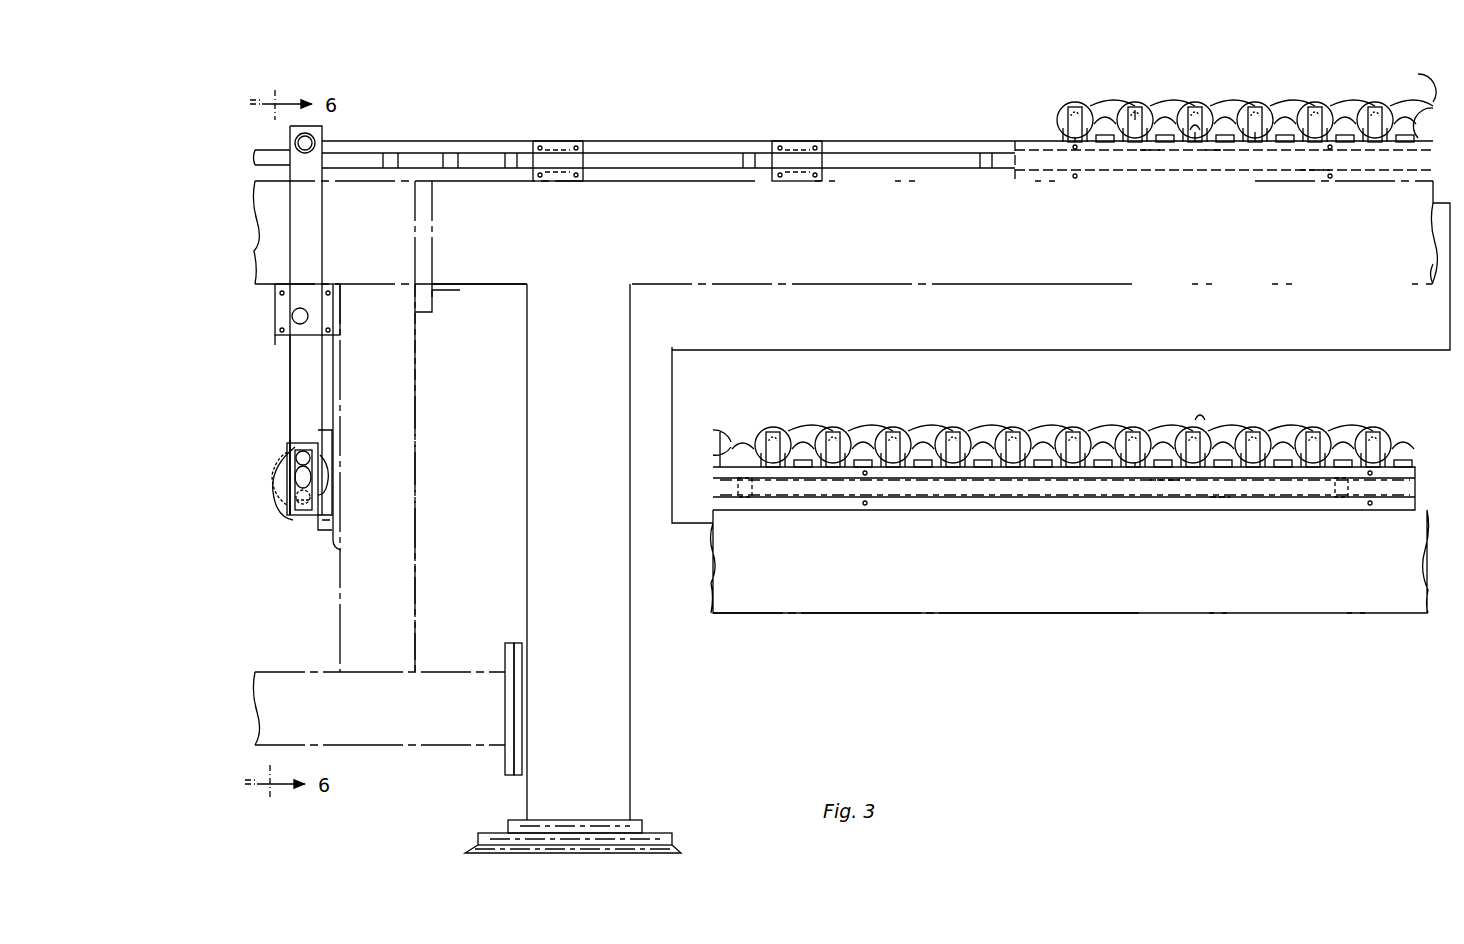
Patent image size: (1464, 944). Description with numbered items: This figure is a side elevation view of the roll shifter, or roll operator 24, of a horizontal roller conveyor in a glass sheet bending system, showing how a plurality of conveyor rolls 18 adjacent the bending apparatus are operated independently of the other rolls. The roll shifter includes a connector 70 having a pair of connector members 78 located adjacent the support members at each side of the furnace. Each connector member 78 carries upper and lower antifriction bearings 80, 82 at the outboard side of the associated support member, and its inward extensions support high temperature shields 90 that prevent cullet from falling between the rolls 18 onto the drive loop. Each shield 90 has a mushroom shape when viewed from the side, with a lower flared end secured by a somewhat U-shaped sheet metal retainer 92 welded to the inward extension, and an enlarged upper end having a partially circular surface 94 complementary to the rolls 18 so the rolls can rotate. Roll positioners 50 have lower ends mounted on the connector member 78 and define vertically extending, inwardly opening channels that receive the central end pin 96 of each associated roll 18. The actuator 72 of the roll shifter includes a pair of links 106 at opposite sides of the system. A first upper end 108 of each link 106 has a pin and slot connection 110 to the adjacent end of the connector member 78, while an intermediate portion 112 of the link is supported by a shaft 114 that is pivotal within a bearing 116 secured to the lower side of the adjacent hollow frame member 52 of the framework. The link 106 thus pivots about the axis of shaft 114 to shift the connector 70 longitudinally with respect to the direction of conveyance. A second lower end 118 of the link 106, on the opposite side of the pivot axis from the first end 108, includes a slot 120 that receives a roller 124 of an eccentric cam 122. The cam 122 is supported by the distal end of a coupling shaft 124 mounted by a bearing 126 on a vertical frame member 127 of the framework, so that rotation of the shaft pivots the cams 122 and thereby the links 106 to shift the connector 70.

The conveyor roll 18 is at (1185, 135).
The roll operator 24 is at (1005, 129).
The roll positioner 50 is at (1078, 110).
The frame member 52 is at (490, 284).
The connector 70 is at (798, 140).
The actuator 72 is at (280, 370).
The connector member 78 is at (583, 140).
The upper antifriction bearing 80 is at (1150, 140).
The lower antifriction bearing 82 is at (1310, 175).
The high temperature shield 90 is at (1407, 89).
The sheet metal retainer 92 is at (1078, 135).
The partially circular surface 94 is at (1135, 115).
The central end pin 96 is at (1182, 140).
The link 106 is at (313, 260).
The first upper end 108 is at (322, 145).
The pin and slot connection 110 is at (308, 153).
The intermediate portion 112 is at (310, 292).
The shaft 114 is at (308, 316).
The bearing 116 is at (275, 338).
The second lower end 118 is at (297, 427).
The slot 120 is at (300, 485).
The eccentric cam 122 is at (317, 480).
The roller 124 is at (305, 459).
The bearing 126 is at (318, 515).
The vertical frame member 127 is at (416, 362).